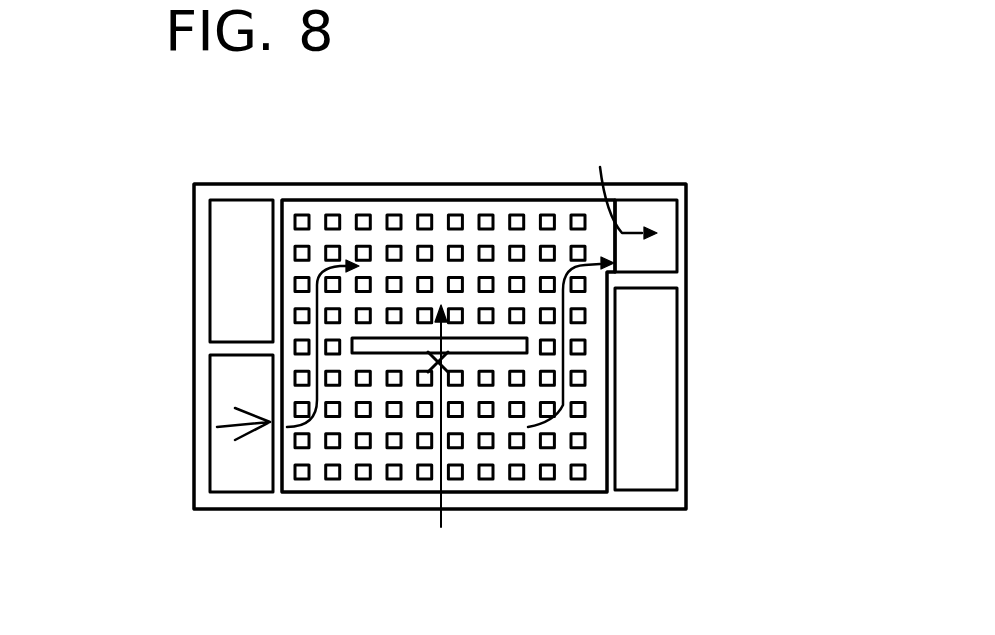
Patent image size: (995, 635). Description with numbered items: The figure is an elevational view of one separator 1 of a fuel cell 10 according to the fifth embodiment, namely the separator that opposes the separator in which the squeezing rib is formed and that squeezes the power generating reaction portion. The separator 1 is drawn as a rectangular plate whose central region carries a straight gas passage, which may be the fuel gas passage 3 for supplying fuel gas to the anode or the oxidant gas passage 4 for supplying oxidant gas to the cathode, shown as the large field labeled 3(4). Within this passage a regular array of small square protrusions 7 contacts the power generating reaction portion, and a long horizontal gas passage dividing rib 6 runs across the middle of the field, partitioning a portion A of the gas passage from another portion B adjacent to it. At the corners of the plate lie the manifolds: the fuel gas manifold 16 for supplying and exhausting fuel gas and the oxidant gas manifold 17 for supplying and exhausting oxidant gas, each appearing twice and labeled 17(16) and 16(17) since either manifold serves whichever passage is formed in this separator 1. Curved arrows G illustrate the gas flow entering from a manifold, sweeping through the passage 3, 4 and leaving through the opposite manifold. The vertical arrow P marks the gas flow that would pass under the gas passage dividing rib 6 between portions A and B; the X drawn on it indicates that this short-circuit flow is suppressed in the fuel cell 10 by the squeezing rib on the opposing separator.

The separator 1 is at (471, 183).
The fuel cell 10 is at (712, 172).
The fuel gas passage 3 is at (530, 470).
The oxidant gas passage 4 is at (448, 346).
The gas passage dividing rib 6 is at (373, 345).
The protrusion 7 is at (332, 250).
The fuel gas manifold 16 is at (230, 377).
The oxidant gas manifold 17 is at (238, 217).
The portion of the gas passage A is at (378, 457).
The another portion of the gas passage B is at (402, 238).
The gas flow G is at (217, 427).
The gas flow passing under the gas passage dividing rib P is at (440, 437).